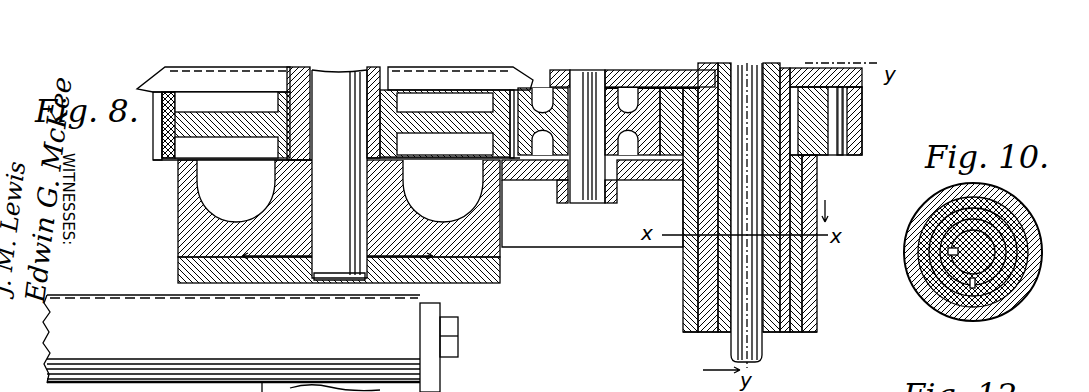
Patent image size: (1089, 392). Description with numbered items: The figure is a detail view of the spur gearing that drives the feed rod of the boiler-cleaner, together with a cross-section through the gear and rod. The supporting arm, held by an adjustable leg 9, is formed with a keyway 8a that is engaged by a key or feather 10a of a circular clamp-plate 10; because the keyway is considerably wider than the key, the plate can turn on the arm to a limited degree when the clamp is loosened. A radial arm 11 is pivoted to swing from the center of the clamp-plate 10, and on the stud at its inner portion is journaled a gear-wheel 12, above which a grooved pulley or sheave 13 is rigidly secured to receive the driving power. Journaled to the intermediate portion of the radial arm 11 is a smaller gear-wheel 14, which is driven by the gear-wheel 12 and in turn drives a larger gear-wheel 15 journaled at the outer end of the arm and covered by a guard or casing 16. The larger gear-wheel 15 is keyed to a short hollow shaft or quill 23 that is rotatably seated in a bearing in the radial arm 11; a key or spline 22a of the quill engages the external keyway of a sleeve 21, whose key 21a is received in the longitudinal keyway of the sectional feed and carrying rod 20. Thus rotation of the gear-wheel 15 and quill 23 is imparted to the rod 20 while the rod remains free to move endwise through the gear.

In FIG. 8, the keyway 8a is at (106, 296).
In FIG. 8, the adjustable leg 9 is at (439, 347).
In FIG. 8, the clamp-plate 10 is at (213, 283).
In FIG. 8, the key or feather 10a is at (288, 288).
In FIG. 8, the radial arm 11 is at (340, 191).
In FIG. 8, the gear-wheel 12 is at (226, 148).
In FIG. 8, the grooved pulley or sheave 13 is at (243, 80).
In FIG. 8, the smaller gear-wheel 14 is at (534, 163).
In FIG. 8, the larger gear-wheel 15 is at (667, 157).
In FIG. 8, the guard or casing 16 is at (862, 103).
In FIG. 8, the sectional feed and carrying rod 20 is at (753, 287).
In FIG. 10, the sectional feed and carrying rod 20 is at (992, 250).
In FIG. 8, the sleeve 21 is at (720, 253).
In FIG. 10, the sleeve 21 is at (943, 255).
In FIG. 8, the key 21a is at (720, 320).
In FIG. 10, the key or spline 22a is at (970, 287).
In FIG. 8, the short hollow shaft or quill 23 is at (787, 332).
In FIG. 10, the short hollow shaft or quill 23 is at (990, 285).